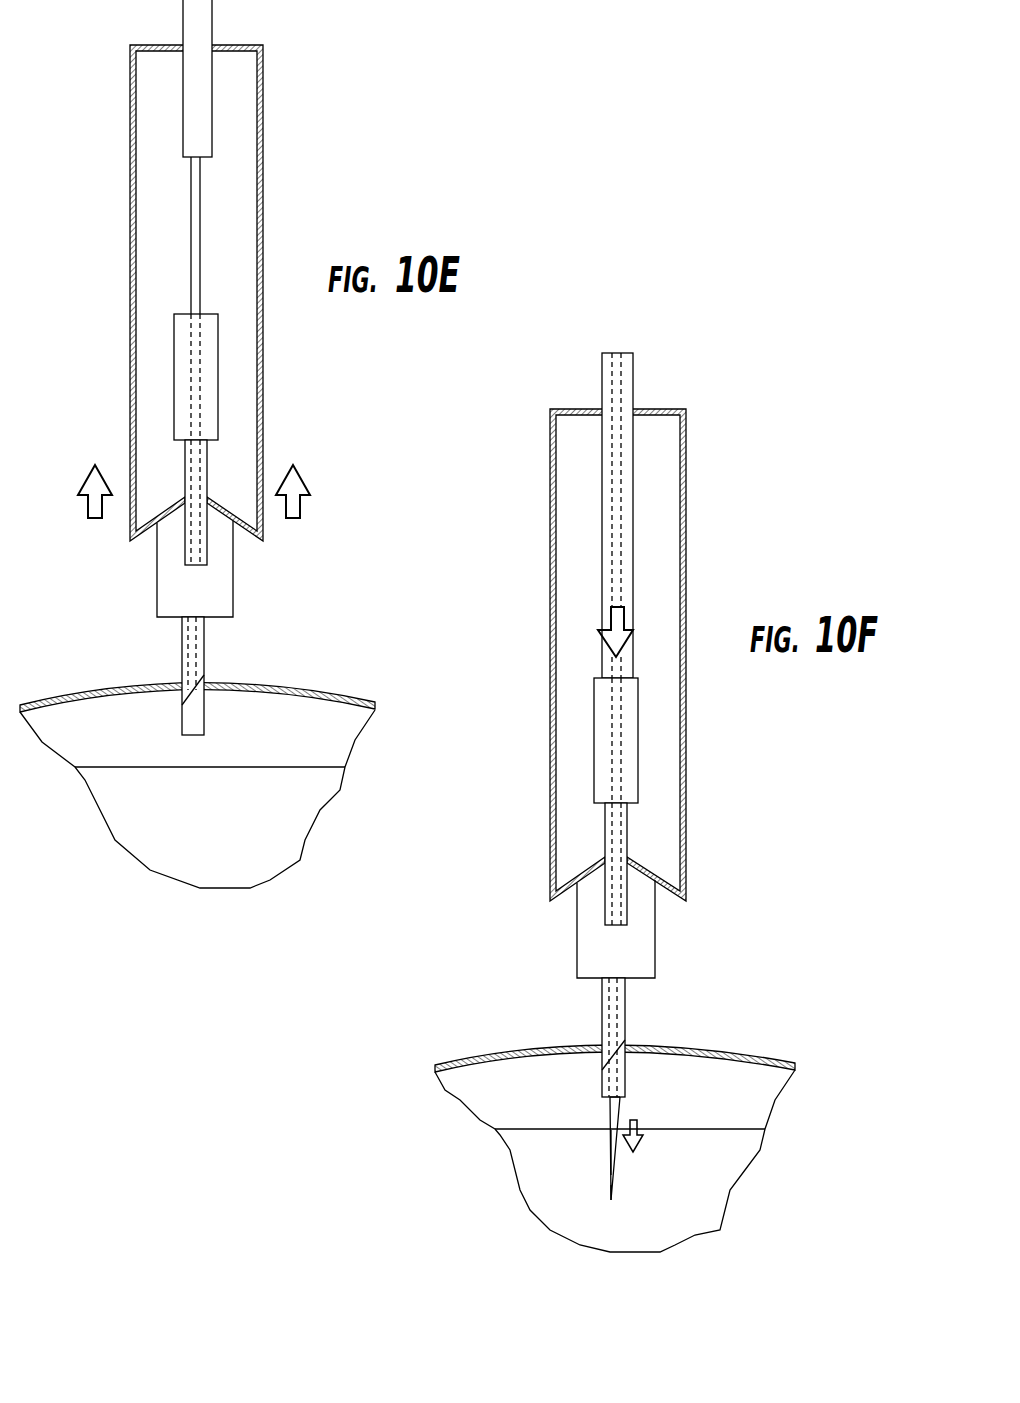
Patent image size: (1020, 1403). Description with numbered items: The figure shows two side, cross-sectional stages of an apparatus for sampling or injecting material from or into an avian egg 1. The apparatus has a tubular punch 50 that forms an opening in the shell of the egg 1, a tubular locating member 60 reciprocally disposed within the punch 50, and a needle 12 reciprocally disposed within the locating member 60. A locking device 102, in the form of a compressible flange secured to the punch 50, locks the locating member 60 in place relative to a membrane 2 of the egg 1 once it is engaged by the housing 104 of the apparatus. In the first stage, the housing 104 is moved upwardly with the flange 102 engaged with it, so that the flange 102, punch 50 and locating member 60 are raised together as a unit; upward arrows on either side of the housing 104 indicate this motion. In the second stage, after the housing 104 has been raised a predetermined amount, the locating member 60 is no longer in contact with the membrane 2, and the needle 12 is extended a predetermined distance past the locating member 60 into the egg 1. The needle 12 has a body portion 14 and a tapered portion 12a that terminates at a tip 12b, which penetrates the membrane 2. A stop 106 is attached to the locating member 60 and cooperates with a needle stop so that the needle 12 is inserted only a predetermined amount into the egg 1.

In FIG. 10E, the egg 1 is at (310, 690).
In FIG. 10F, the egg 1 is at (762, 1058).
In FIG. 10E, the membrane 2 is at (128, 766).
In FIG. 10F, the membrane 2 is at (527, 1128).
In FIG. 10E, the needle 12 is at (204, 210).
In FIG. 10F, the needle 12 is at (606, 1108).
In FIG. 10F, the tapered portion 12a is at (614, 1170).
In FIG. 10F, the tip 12b is at (612, 1200).
In FIG. 10F, the body portion 14 is at (624, 1108).
In FIG. 10E, the tubular punch 50 is at (206, 640).
In FIG. 10F, the tubular punch 50 is at (628, 1012).
In FIG. 10E, the tubular locating member 60 is at (205, 465).
In FIG. 10F, the tubular locating member 60 is at (616, 864).
In FIG. 10E, the locking device 102 is at (233, 565).
In FIG. 10F, the locking device 102 is at (655, 933).
In FIG. 10E, the housing 104 is at (263, 127).
In FIG. 10F, the housing 104 is at (686, 470).
In FIG. 10E, the stop 106 is at (218, 379).
In FIG. 10F, the stop 106 is at (638, 740).